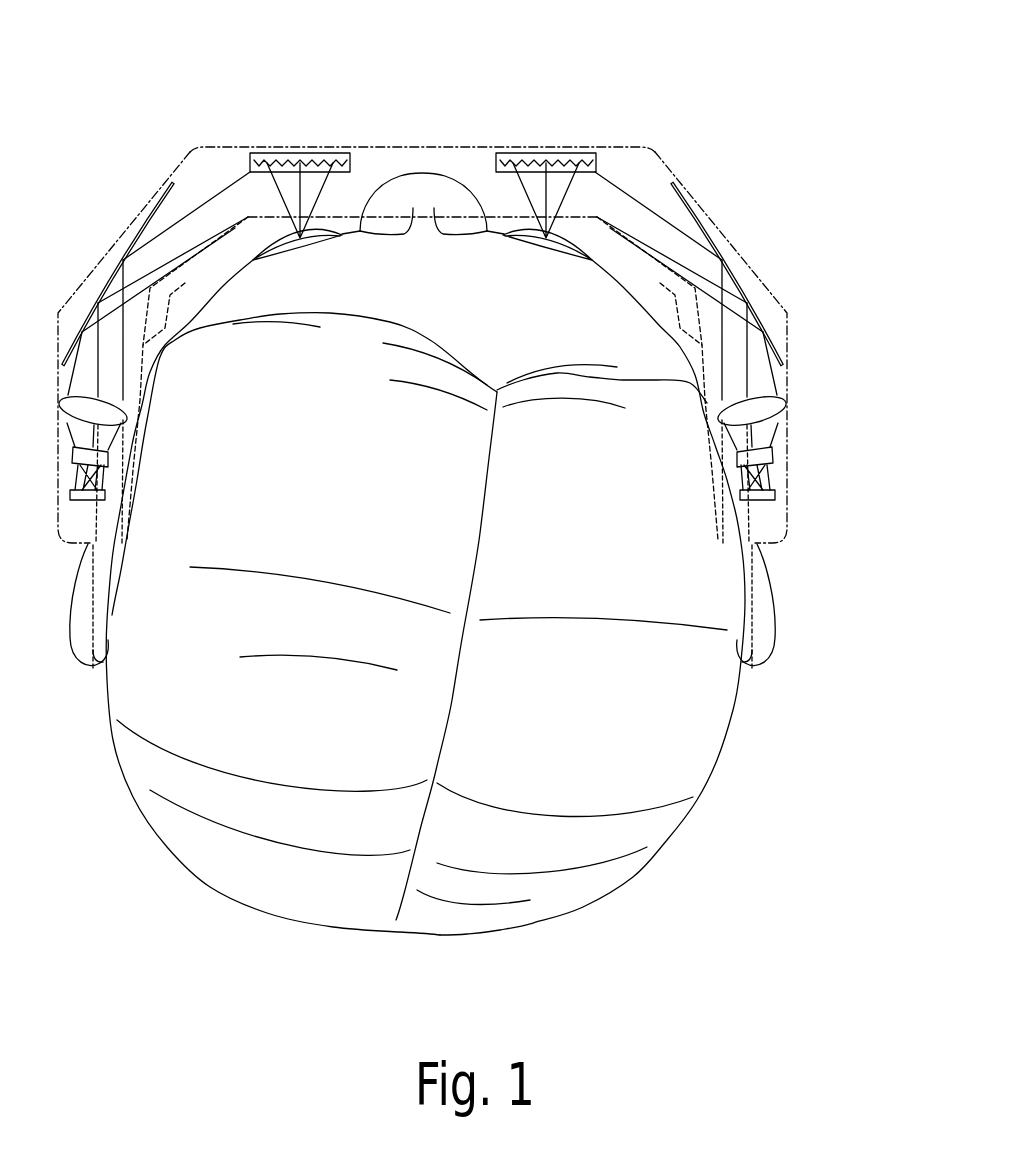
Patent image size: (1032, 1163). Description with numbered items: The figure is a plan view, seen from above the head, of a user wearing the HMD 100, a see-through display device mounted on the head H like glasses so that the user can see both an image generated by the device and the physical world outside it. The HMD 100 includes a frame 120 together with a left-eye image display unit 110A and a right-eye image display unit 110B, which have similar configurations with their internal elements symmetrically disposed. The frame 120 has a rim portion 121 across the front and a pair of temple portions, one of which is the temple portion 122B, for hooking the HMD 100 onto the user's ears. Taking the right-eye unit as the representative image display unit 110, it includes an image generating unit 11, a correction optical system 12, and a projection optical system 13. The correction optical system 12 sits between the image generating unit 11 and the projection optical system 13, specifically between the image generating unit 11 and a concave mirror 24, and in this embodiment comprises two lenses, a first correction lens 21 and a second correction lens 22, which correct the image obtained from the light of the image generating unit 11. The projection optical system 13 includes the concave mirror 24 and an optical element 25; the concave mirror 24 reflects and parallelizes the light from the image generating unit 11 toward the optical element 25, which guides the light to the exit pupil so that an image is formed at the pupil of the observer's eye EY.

The HMD 100 is at (414, 84).
The image display unit 110 is at (456, 142).
The left-eye image display unit 110A is at (283, 140).
The right-eye image display unit 110B is at (571, 128).
The frame 120 is at (362, 140).
The rim portion 121 is at (465, 146).
The temple portion 122B is at (86, 277).
The optical element 25 is at (523, 162).
The projection optical system 13 is at (684, 166).
The concave mirror 24 is at (700, 217).
The correction optical system 12 is at (855, 380).
The second correction lens 22 is at (777, 405).
The first correction lens 21 is at (770, 455).
The image generating unit 11 is at (773, 490).
The eye EY is at (547, 241).
The head of user H is at (346, 910).